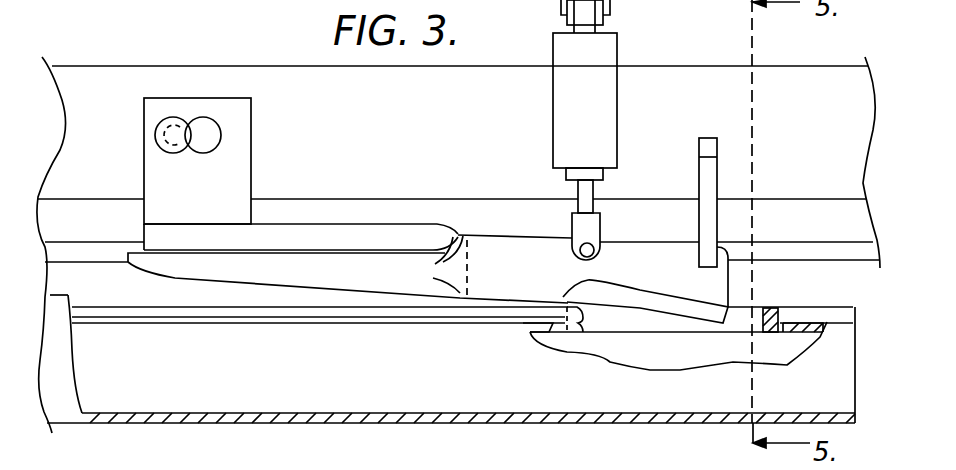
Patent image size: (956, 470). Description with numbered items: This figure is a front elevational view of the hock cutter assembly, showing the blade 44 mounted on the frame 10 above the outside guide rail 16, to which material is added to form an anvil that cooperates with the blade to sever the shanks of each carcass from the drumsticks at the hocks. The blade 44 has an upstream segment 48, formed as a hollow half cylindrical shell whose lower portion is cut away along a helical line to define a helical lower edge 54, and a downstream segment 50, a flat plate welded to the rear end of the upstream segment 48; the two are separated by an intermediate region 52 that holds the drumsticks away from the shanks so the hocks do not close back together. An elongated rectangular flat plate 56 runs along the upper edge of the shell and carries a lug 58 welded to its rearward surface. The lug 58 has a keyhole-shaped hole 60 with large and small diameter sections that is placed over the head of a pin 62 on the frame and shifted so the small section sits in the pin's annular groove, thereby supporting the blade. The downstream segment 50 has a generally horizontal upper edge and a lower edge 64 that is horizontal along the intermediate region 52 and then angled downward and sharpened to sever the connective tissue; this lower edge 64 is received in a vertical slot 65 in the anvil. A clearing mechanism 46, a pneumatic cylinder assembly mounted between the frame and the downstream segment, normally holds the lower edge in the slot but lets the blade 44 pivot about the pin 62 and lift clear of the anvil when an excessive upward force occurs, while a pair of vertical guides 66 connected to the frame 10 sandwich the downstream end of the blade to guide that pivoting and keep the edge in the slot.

The frame 10 is at (258, 64).
The guide rail 16 is at (233, 313).
The blade 44 is at (452, 222).
The clearing mechanism 46 is at (598, 55).
The upstream segment 48 is at (318, 280).
The downstream segment 50 is at (618, 250).
The intermediate region 52 is at (500, 243).
The helical lower edge 54 is at (173, 273).
The rectangular flat plate 56 is at (330, 227).
The lug 58 is at (237, 172).
The keyhole-shaped hole 60 is at (213, 117).
The pin 62 is at (167, 125).
The lower edge 64 is at (676, 318).
The vertical slot 65 is at (628, 322).
The vertical guides 66 is at (708, 212).